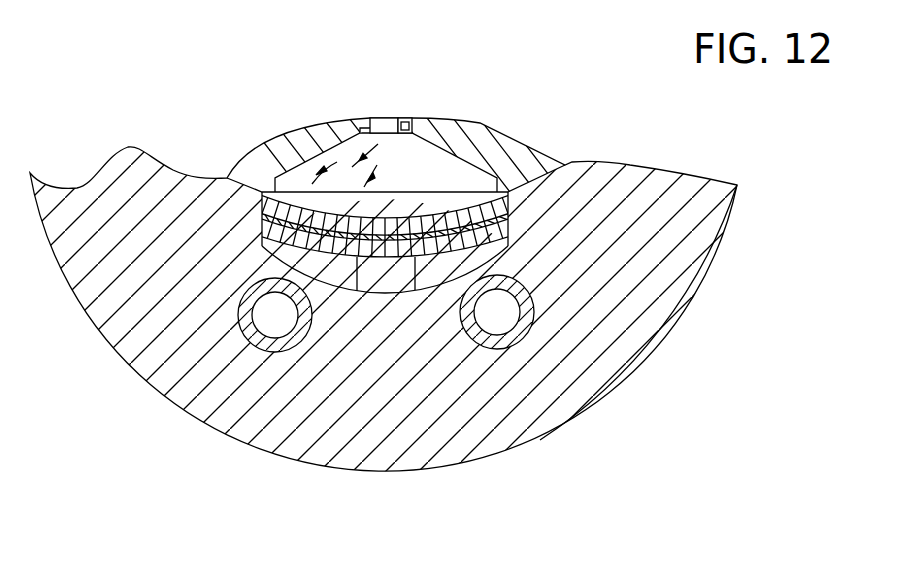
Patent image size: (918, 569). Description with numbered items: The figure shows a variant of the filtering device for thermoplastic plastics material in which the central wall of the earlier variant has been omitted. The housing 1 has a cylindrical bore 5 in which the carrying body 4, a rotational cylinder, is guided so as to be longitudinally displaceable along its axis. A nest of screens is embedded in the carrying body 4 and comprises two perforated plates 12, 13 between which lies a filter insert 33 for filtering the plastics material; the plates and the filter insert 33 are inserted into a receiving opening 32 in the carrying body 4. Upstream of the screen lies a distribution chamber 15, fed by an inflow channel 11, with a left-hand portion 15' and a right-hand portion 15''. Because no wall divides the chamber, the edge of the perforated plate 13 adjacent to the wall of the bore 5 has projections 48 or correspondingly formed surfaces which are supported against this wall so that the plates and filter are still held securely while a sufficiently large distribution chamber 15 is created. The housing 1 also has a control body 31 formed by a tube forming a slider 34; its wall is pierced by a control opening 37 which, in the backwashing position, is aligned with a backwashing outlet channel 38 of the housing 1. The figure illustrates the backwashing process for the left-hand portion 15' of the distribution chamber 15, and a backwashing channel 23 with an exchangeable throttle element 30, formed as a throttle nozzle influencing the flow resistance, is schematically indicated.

The housing 1 is at (723, 257).
The carrying body 4 is at (526, 165).
The cylindrical bore 5 is at (578, 342).
The inflow channel 11 is at (405, 280).
The perforated plate 12 is at (262, 192).
The perforated plate 13 is at (262, 230).
The distribution chamber 15 is at (355, 253).
The left-hand portion of the distribution chamber 15' is at (313, 335).
The right-hand portion of the distribution chamber 15'' is at (472, 346).
The backwashing channel 23 is at (387, 128).
The throttle element 30 is at (408, 130).
The control body 31 is at (283, 356).
The receiving opening 32 is at (510, 212).
The filter insert 33 is at (262, 212).
The slider 34 is at (250, 341).
The control opening 37 is at (297, 288).
The backwashing outlet channel 38 is at (277, 352).
The projections 48 is at (262, 245).